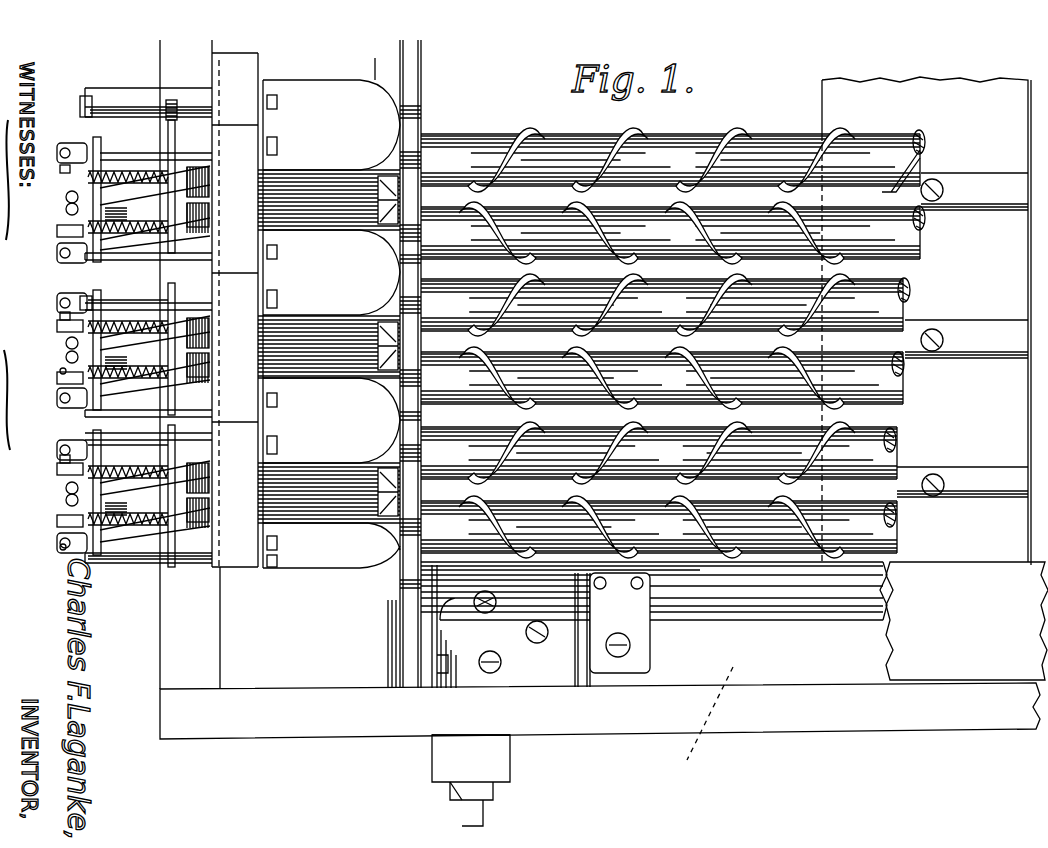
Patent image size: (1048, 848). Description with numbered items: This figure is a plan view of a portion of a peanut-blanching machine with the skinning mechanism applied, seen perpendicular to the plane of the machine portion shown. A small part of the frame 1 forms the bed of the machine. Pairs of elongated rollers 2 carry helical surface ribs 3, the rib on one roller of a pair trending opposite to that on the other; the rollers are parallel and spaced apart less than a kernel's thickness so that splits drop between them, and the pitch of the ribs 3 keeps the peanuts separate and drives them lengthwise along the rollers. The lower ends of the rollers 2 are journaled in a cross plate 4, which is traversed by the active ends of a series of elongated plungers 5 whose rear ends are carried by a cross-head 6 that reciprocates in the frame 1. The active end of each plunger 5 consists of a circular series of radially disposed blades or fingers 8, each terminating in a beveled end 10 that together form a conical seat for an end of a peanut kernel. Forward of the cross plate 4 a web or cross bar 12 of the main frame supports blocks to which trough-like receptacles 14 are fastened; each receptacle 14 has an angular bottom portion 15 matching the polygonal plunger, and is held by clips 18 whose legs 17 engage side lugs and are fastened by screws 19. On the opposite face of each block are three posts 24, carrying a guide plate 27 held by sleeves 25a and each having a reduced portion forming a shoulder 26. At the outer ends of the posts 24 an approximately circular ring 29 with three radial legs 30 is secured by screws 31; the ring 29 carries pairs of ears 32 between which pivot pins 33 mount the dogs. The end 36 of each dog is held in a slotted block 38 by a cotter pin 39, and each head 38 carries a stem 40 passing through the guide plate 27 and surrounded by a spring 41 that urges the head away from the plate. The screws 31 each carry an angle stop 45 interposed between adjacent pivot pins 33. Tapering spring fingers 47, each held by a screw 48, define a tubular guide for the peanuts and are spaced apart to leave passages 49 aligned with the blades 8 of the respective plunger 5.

The frame 1 is at (330, 730).
The rollers 2 is at (927, 175).
The helical surface ribs 3 is at (713, 527).
The cross plate 4 is at (412, 385).
The plungers 5 is at (725, 197).
The cross-head 6 is at (926, 321).
The blades or fingers 8 is at (386, 204).
The beveled end 10 is at (405, 207).
The web or cross bar 12 is at (215, 640).
The trough-like receptacle 14 is at (341, 82).
The angular bottom portion 15 is at (329, 346).
The legs 17 is at (277, 110).
The clips 18 is at (235, 329).
The screws 19 is at (278, 145).
The posts 24 is at (176, 290).
The sleeves 25a is at (120, 105).
The shoulder 26 is at (182, 447).
The guide plate 27 is at (172, 120).
The frame or ring 29 is at (107, 351).
The radial legs 30 is at (103, 134).
The screws 31 is at (80, 100).
The ears 32 is at (66, 203).
The pivot pin 33 is at (66, 350).
The terminal portion of dog 36 is at (57, 231).
The slotted block or head 38 is at (85, 145).
The pin 39 is at (60, 372).
The stem 40 is at (135, 170).
The spring 41 is at (130, 300).
The angle stop 45 is at (62, 168).
The spring fingers 47 is at (180, 598).
The screw 48 is at (208, 222).
The passages 49 is at (188, 497).